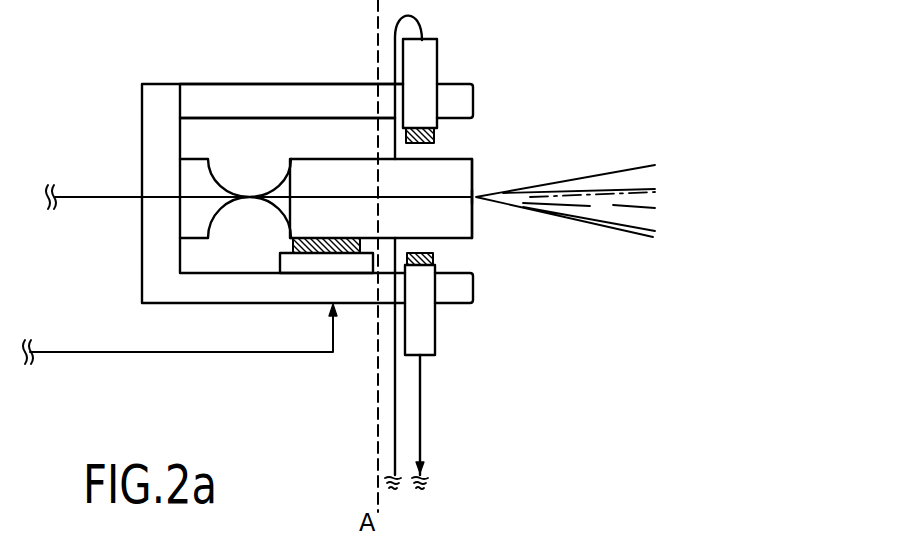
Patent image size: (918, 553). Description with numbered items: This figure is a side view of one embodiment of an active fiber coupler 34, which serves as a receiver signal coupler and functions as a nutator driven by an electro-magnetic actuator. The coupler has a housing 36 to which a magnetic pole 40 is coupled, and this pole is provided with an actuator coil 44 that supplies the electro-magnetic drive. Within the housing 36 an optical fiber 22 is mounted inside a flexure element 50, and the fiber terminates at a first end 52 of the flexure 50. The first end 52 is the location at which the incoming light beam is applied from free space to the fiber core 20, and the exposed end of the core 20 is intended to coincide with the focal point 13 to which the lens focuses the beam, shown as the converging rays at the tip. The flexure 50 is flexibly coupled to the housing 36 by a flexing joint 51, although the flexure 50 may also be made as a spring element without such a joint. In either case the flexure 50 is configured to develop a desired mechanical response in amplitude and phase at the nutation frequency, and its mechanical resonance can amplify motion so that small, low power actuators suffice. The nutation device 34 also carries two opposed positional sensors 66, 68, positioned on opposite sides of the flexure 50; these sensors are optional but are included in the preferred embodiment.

The active fiber coupler 34 is at (127, 161).
The housing 36 is at (313, 90).
The flexing joint 51 is at (256, 158).
The flexure element 50 is at (312, 162).
The optical fiber 22 is at (397, 199).
The first end of flexure 52 is at (474, 160).
The core 20 is at (480, 192).
The focal point 13 is at (479, 208).
The positional sensor 66 is at (434, 136).
The positional sensor 68 is at (434, 256).
The actuator coil 44 is at (292, 246).
The magnetic pole 40 is at (308, 263).